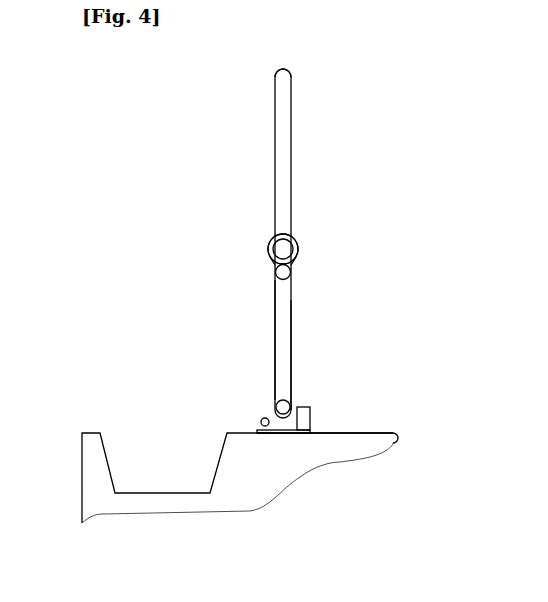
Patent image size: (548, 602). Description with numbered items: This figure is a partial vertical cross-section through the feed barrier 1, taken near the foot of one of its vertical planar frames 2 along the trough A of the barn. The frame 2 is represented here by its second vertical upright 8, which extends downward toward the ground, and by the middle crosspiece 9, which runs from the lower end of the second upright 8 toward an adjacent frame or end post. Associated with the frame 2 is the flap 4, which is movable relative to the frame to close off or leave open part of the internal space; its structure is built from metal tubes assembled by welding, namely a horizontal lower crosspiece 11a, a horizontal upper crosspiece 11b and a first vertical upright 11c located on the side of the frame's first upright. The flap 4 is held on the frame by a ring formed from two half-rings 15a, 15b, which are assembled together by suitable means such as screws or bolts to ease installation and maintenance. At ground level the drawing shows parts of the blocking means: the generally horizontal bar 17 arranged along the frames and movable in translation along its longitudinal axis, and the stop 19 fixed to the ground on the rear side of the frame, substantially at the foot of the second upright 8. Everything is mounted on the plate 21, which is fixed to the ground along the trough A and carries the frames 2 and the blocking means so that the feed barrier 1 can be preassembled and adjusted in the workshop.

The feed barrier 1 is at (338, 132).
The vertical planar frame 2 is at (291, 77).
The flap 4 is at (292, 350).
The second vertical upright 8 is at (275, 107).
The middle crosspiece 9 is at (280, 247).
The horizontal lower crosspiece 11a is at (280, 405).
The horizontal upper crosspiece 11b is at (283, 270).
The first vertical upright 11c is at (275, 325).
The half-ring 15a is at (293, 259).
The half-ring 15b is at (296, 239).
The horizontal bar 17 is at (261, 424).
The stop 19 is at (305, 425).
The plate 21 is at (285, 435).
The trough A is at (106, 458).